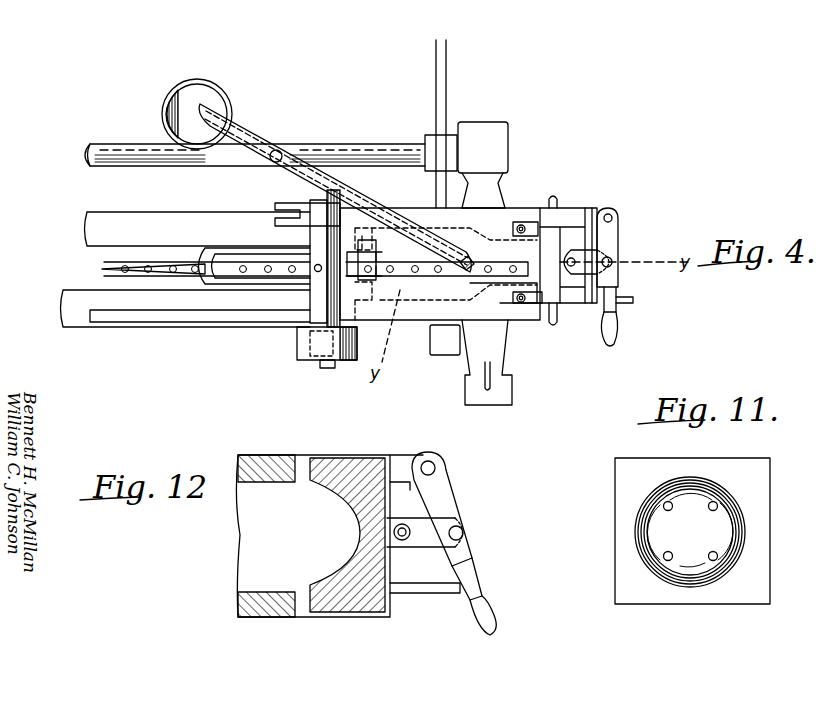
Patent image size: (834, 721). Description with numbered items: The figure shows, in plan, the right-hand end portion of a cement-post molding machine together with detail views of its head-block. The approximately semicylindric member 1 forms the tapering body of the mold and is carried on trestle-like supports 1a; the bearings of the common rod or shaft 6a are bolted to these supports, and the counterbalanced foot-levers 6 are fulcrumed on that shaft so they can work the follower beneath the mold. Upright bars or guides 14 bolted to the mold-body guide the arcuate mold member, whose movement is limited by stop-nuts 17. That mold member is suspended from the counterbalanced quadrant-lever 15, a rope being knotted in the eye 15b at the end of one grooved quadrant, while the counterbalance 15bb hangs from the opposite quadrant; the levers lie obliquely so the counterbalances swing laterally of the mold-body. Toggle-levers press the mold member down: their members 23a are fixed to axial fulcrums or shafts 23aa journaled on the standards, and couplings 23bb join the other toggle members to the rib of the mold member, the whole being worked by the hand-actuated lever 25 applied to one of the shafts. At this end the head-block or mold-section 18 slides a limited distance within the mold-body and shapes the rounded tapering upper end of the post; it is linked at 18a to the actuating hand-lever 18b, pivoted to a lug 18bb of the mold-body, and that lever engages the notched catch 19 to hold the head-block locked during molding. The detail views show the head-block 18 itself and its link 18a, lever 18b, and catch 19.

In FIG. 4, the semicylindric member 1 is at (393, 322).
In FIG. 12, the semicylindric member 1 is at (266, 605).
In FIG. 4, the trestle-like framing or supports 1a is at (482, 338).
In FIG. 4, the counterbalanced foot-levers 6 is at (436, 112).
In FIG. 4, the rod or shaft 6a is at (88, 156).
In FIG. 4, the upright bars or guides 14 is at (522, 226).
In FIG. 4, the quadrant-levers 15 is at (288, 163).
In FIG. 4, the eye 15b is at (466, 258).
In FIG. 4, the counterbalance 15bb is at (210, 90).
In FIG. 4, the stop-nuts 17 is at (518, 226).
In FIG. 4, the head-block or mold-section 18 is at (551, 235).
In FIG. 12, the head-block or mold-section 18 is at (366, 470).
In FIG. 11, the head-block or mold-section 18 is at (617, 545).
In FIG. 4, the link connection 18a is at (592, 264).
In FIG. 12, the link connection 18a is at (428, 530).
In FIG. 4, the actuating hand-lever 18b is at (618, 280).
In FIG. 12, the actuating hand-lever 18b is at (463, 556).
In FIG. 4, the lug 18bb is at (616, 230).
In FIG. 12, the lug 18bb is at (442, 509).
In FIG. 4, the notched or shouldered catch 19 is at (630, 305).
In FIG. 12, the notched or shouldered catch 19 is at (422, 594).
In FIG. 4, the toggle members 23a is at (276, 214).
In FIG. 4, the axial fulcrums or shafts 23aa is at (316, 254).
In FIG. 4, the couplings 23bb is at (214, 254).
In FIG. 4, the hand-actuated lever 25 is at (158, 314).